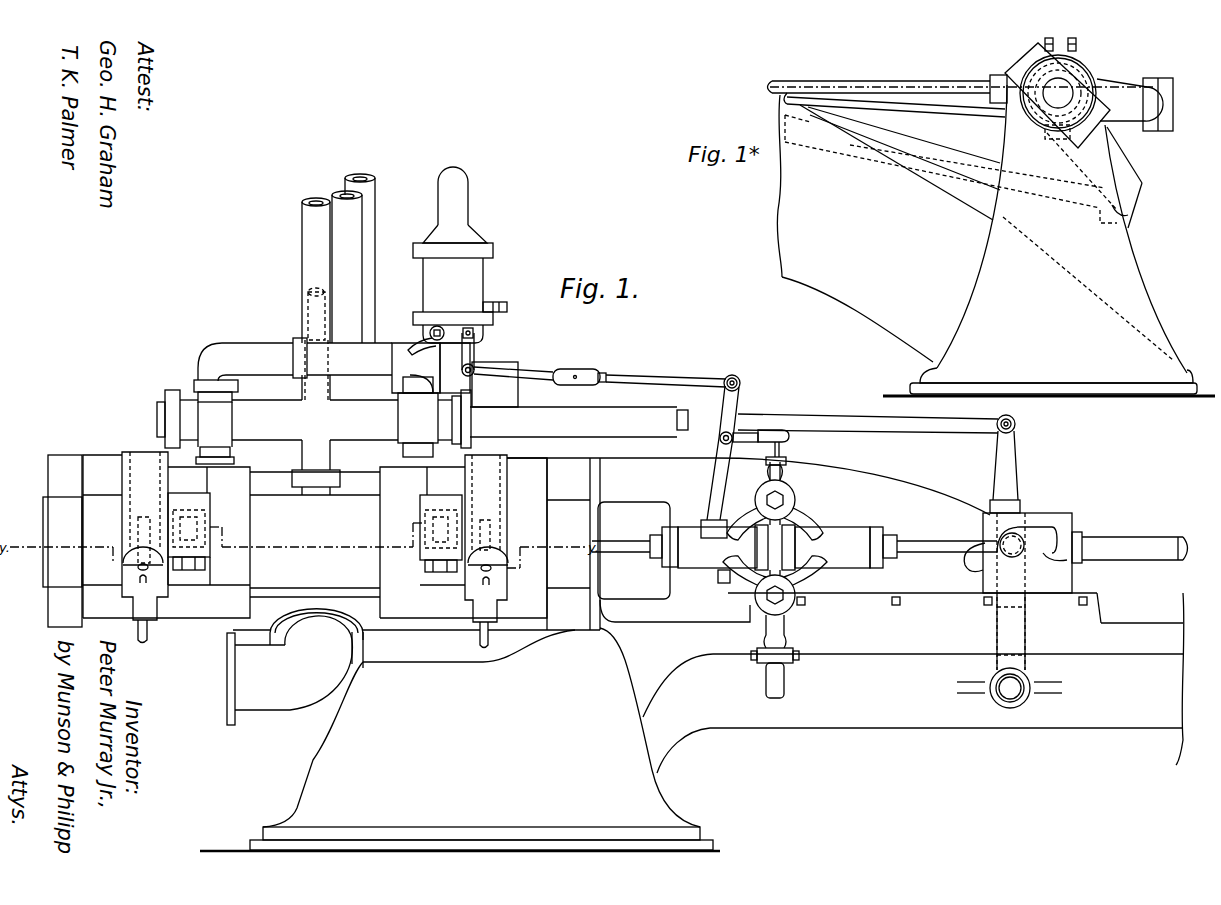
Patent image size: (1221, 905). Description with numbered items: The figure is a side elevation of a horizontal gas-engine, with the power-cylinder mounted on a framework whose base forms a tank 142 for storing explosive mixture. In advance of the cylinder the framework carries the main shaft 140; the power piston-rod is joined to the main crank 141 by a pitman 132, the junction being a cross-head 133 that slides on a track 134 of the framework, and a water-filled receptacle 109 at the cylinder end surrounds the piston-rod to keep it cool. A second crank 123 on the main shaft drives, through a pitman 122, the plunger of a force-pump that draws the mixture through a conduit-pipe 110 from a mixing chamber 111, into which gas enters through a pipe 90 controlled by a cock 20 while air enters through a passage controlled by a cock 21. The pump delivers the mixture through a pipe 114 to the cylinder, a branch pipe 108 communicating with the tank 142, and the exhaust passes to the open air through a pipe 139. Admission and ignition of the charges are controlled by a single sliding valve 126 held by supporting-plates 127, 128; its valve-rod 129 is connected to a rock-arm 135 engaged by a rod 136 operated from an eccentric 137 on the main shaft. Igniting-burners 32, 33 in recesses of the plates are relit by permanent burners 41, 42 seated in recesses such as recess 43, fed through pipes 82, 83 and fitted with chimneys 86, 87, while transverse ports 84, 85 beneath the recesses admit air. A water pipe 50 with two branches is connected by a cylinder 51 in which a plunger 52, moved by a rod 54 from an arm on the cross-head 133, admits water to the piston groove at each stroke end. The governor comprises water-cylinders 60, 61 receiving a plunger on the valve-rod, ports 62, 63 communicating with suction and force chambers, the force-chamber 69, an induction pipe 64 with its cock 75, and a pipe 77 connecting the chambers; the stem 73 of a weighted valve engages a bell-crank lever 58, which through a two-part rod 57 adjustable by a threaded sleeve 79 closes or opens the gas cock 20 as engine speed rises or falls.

In FIG. 1, the cock 20 is at (474, 345).
In FIG. 1, the cock 21 is at (426, 336).
In FIG. 1, the igniting-burner 32 is at (188, 518).
In FIG. 1, the igniting-burner 33 is at (432, 530).
In FIG. 1, the permanent burner 41 is at (132, 582).
In FIG. 1, the permanent burner 42 is at (512, 585).
In FIG. 1, the recess 43 is at (148, 568).
In FIG. 1, the pipe 50 is at (308, 292).
In FIG. 1, the cylinder 51 is at (304, 419).
In FIG. 1, the plunger 52 is at (570, 419).
In FIG. 1, the rod 54 is at (903, 420).
In FIG. 1, the rod 57 is at (664, 381).
In FIG. 1, the bell-crank lever 58 is at (733, 400).
In FIG. 1, the water-cylinder 60 is at (728, 554).
In FIG. 1, the water-cylinder 61 is at (839, 547).
In FIG. 1, the induction and eduction port 62 is at (738, 610).
In FIG. 1, the induction and eduction port 63 is at (749, 505).
In FIG. 1, the induction pipe 64 is at (779, 675).
In FIG. 1, the force-chamber 69 is at (787, 478).
In FIG. 1, the stem 73 is at (790, 441).
In FIG. 1, the cock 75 is at (762, 661).
In FIG. 1, the pipe 77 is at (777, 518).
In FIG. 1, the screw-threaded sleeve 79 is at (578, 376).
In FIG. 1, the pipe 82 is at (152, 633).
In FIG. 1, the pipe 83 is at (480, 639).
In FIG. 1, the transverse port 84 is at (192, 563).
In FIG. 1, the transverse port 85 is at (432, 565).
In FIG. 1, the chimney 86 is at (145, 536).
In FIG. 1, the chimney 87 is at (486, 538).
In FIG. 1, the pipe 90 is at (507, 308).
In FIG. 1, the branch pipe 108 is at (355, 272).
In FIG. 1, the receptacle 109 is at (634, 550).
In FIG. 1, the conduit-pipe 110 is at (455, 280).
In FIG. 1, the chamber 111 is at (453, 284).
In FIG. 1, the pipe 114 is at (302, 249).
The pitman 122 is at (957, 179).
The crank 123 is at (1121, 157).
In FIG. 1, the valve 126 is at (321, 542).
In FIG. 1, the supporting-plate 127 is at (166, 536).
In FIG. 1, the supporting-plate 128 is at (463, 538).
In FIG. 1, the valve-rod 129 is at (628, 546).
In FIG. 1, the pitman 132 is at (1174, 565).
The pitman 132 is at (945, 117).
In FIG. 1, the cross-head 133 is at (1023, 553).
In FIG. 1, the track 134 is at (892, 683).
In FIG. 1, the rock-arm 135 is at (1023, 633).
In FIG. 1, the rod 136 is at (1104, 544).
The rod 136 is at (920, 84).
The eccentric 137 is at (1078, 63).
In FIG. 1, the pipe 139 is at (295, 667).
The main shaft 140 is at (1058, 93).
The main crank 141 is at (1116, 82).
In FIG. 1, the tank 142 is at (460, 739).